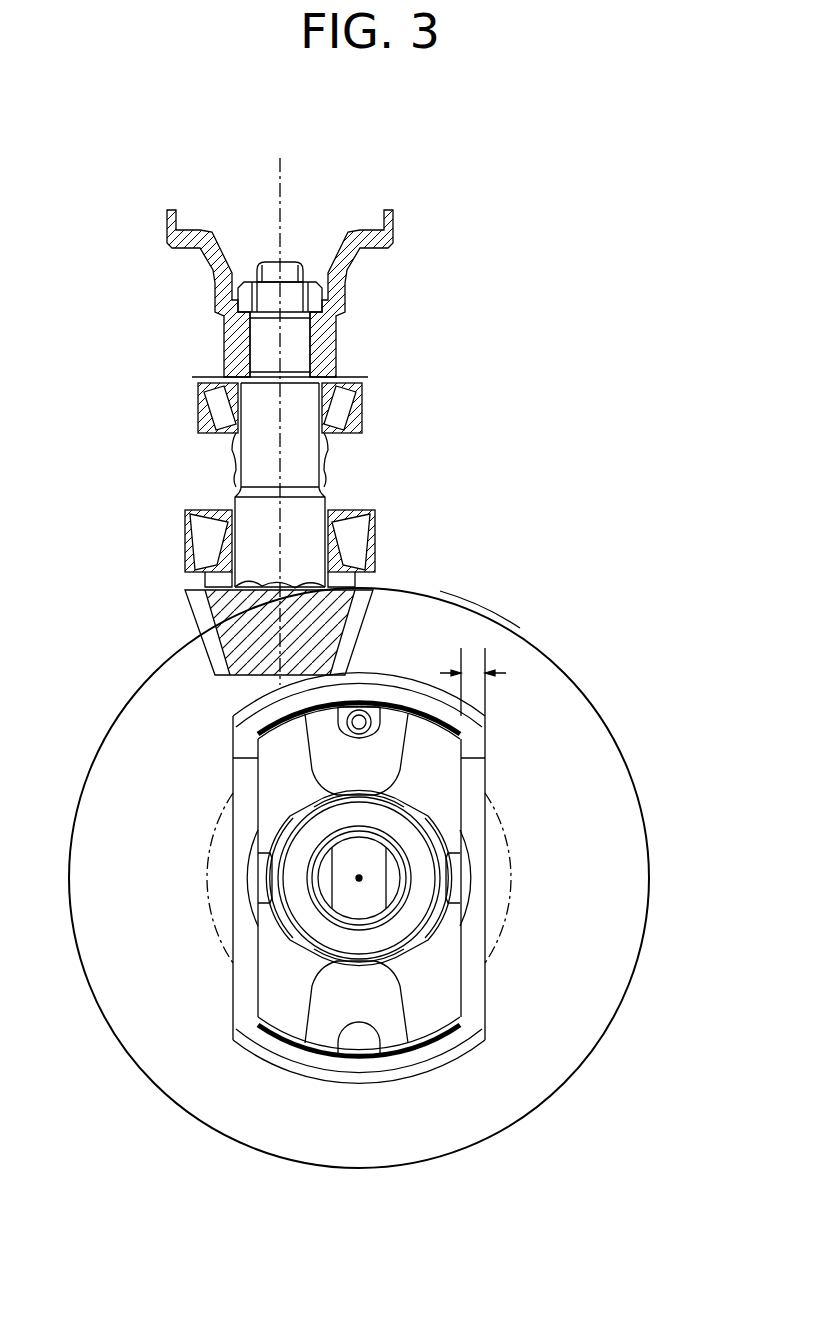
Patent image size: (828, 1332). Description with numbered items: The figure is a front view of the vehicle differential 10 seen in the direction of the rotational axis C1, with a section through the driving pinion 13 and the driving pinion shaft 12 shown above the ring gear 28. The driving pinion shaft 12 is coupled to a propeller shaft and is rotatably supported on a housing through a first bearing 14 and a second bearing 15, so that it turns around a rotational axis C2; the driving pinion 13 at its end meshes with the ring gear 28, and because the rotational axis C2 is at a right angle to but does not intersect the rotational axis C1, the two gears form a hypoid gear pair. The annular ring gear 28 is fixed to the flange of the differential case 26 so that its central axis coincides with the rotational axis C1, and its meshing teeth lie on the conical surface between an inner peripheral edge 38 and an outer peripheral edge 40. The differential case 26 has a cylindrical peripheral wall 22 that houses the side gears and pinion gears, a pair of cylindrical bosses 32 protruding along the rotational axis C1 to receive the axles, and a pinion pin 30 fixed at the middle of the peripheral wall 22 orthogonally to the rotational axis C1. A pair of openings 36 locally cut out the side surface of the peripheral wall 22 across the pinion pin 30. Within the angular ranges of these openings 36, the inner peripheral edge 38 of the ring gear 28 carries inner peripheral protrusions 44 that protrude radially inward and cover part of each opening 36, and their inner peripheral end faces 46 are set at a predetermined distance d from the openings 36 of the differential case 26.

The vehicle differential 10 is at (457, 185).
The driving pinion shaft 12 is at (252, 463).
The driving pinion 13 is at (200, 616).
The first bearing 14 is at (365, 418).
The second bearing 15 is at (378, 534).
The peripheral wall 22 is at (433, 1018).
The differential case 26 is at (500, 772).
The ring gear 28 is at (160, 1098).
The pinion pin 30 is at (368, 875).
The cylindrical bosses 32 is at (405, 838).
The openings 36 is at (233, 758).
The inner peripheral edge 38 is at (338, 1097).
The outer peripheral edge 40 is at (462, 610).
The inner peripheral protrusions 44 is at (218, 863).
The inner peripheral end faces 46 is at (262, 958).
The rotational axis of the differential case C1 is at (357, 880).
The rotational axis of the driving pinion shaft C2 is at (281, 200).
The predetermined distance d is at (473, 681).